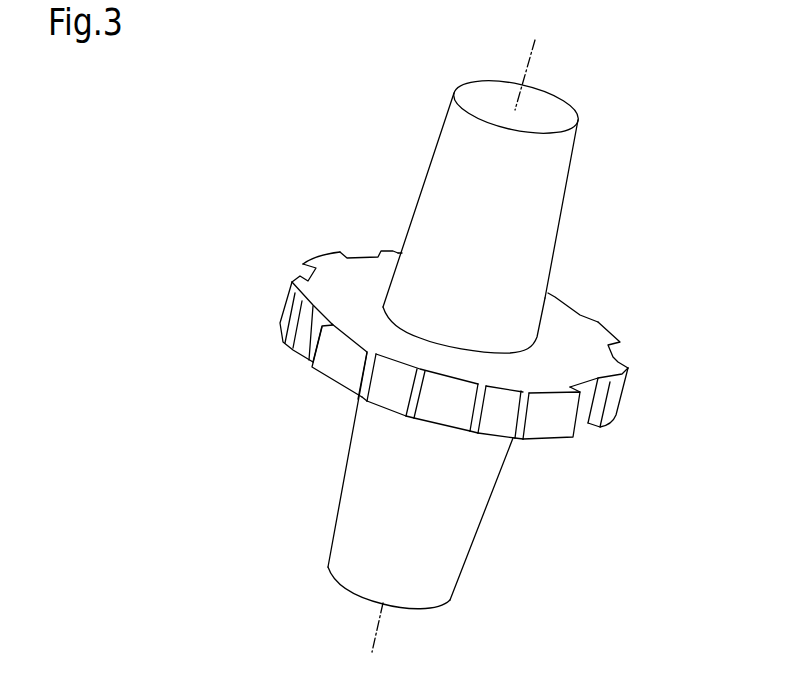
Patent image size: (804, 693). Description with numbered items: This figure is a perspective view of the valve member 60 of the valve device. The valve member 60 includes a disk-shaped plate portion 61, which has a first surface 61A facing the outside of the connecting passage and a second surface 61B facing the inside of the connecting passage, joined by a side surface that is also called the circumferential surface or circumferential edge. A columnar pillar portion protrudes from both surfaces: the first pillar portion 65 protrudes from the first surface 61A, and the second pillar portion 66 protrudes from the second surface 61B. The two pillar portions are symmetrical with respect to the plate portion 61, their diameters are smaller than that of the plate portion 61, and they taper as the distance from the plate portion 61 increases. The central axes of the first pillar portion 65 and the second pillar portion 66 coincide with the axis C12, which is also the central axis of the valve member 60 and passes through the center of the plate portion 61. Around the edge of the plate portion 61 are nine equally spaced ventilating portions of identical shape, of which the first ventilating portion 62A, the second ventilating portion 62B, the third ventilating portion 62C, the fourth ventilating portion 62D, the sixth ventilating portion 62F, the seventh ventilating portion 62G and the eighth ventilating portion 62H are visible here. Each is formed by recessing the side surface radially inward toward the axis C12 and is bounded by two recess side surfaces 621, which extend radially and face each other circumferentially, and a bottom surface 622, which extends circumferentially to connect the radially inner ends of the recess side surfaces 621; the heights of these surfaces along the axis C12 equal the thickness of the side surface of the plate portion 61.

The valve member 60 is at (664, 174).
The plate portion 61 is at (445, 343).
The first surface 61A is at (333, 281).
The second surface 61B is at (547, 440).
The first ventilating portion 62A is at (380, 422).
The second ventilating portion 62B is at (282, 332).
The third ventilating portion 62C is at (302, 265).
The fourth ventilating portion 62D is at (367, 252).
The sixth ventilating portion 62F is at (556, 297).
The seventh ventilating portion 62G is at (620, 359).
The eighth ventilating portion 62H is at (608, 422).
The recess side surface 621 is at (353, 368).
The bottom surface 622 is at (382, 373).
The first pillar portion 65 is at (553, 230).
The second pillar portion 66 is at (453, 555).
The axis C12 is at (531, 62).